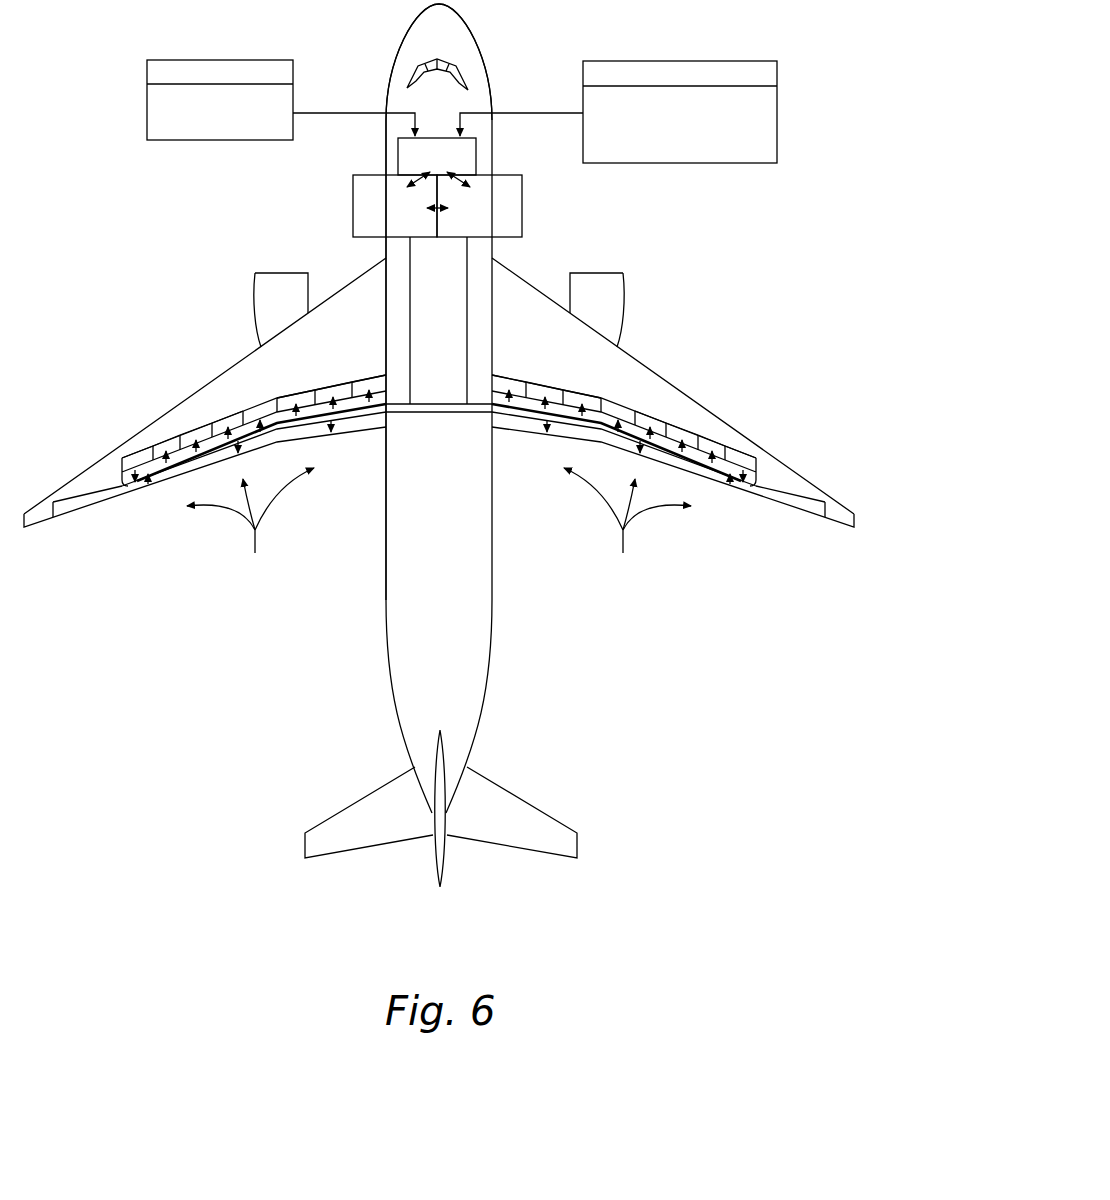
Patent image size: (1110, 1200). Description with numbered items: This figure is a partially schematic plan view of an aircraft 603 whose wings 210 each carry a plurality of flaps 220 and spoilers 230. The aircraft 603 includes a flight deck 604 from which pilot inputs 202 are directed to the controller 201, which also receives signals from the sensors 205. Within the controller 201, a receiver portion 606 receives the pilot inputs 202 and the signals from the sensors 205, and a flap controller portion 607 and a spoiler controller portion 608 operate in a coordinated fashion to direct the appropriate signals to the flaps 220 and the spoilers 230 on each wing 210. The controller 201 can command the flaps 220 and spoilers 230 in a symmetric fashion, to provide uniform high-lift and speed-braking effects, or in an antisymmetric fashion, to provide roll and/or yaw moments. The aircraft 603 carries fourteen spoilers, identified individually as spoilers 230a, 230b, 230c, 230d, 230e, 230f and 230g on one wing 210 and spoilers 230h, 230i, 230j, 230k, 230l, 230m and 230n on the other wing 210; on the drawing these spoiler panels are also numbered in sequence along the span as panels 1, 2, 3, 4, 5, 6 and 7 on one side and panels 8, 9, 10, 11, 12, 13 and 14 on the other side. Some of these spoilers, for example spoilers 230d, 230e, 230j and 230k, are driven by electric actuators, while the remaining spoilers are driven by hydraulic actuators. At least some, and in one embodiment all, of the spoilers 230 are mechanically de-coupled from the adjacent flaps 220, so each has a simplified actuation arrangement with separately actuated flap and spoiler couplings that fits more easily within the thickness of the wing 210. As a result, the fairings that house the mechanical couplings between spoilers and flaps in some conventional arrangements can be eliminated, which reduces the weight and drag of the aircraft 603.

The sensors 205 is at (147, 67).
The pilot inputs 202 is at (777, 70).
The flight deck 604 is at (394, 76).
The aircraft 603 is at (499, 94).
The controller 201 is at (371, 155).
The receiver portion 606 is at (477, 148).
The flap controller portion 607 is at (353, 193).
The spoiler controller portion 608 is at (523, 204).
The wing 210 is at (345, 262).
The spoilers 230 is at (253, 372).
The spoiler 230a is at (125, 457).
The spoiler 230b is at (157, 444).
The spoiler 230c is at (187, 432).
The spoiler 230d is at (218, 419).
The spoiler 230e is at (222, 386).
The spoiler 230f is at (322, 388).
The spoiler 230g is at (356, 386).
The spoiler 230h is at (521, 386).
The spoiler 230i is at (555, 390).
The spoiler 230j is at (614, 383).
The spoiler 230k is at (686, 402).
The spoiler 230l is at (700, 412).
The spoiler 230m is at (730, 437).
The spoiler 230n is at (758, 462).
The flaps 220 is at (439, 526).
The spoiler panel 1 is at (137, 444).
The spoiler panel 2 is at (166, 432).
The spoiler panel 3 is at (196, 421).
The spoiler panel 4 is at (227, 409).
The spoiler panel 5 is at (296, 385).
The spoiler panel 6 is at (333, 377).
The spoiler panel 7 is at (369, 370).
The spoiler panel 8 is at (509, 371).
The spoiler panel 9 is at (544, 378).
The spoiler panel 10 is at (582, 385).
The spoiler panel 11 is at (650, 409).
The spoiler panel 12 is at (682, 421).
The spoiler panel 13 is at (712, 433).
The spoiler panel 14 is at (740, 446).